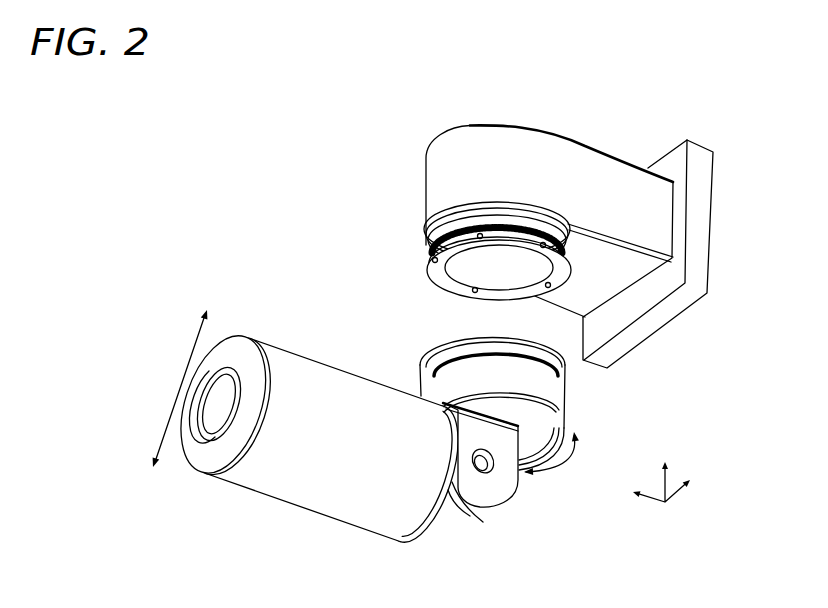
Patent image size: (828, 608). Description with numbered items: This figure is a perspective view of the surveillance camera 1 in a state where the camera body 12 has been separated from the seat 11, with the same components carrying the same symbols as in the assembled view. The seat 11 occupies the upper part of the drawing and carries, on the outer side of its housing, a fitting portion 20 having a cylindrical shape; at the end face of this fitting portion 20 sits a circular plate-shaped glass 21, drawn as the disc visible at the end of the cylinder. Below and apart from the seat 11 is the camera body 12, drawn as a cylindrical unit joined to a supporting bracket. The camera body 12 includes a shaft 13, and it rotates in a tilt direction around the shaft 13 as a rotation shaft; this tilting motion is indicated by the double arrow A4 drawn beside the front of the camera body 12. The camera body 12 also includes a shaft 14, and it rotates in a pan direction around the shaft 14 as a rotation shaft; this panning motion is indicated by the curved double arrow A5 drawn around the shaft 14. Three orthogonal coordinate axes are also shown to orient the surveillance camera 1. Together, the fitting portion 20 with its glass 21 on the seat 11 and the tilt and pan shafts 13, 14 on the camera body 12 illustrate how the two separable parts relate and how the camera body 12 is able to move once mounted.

The surveillance camera 1 is at (346, 188).
The seat 11 is at (590, 145).
The camera body 12 is at (340, 521).
The shaft 13 is at (497, 466).
The shaft 14 is at (535, 433).
The fitting portion 20 is at (425, 243).
The glass 21 is at (483, 268).
The double arrow A4 is at (175, 388).
The double arrow A5 is at (558, 457).